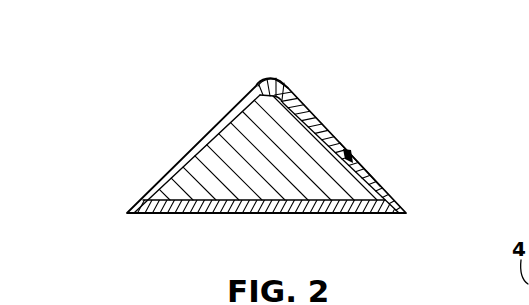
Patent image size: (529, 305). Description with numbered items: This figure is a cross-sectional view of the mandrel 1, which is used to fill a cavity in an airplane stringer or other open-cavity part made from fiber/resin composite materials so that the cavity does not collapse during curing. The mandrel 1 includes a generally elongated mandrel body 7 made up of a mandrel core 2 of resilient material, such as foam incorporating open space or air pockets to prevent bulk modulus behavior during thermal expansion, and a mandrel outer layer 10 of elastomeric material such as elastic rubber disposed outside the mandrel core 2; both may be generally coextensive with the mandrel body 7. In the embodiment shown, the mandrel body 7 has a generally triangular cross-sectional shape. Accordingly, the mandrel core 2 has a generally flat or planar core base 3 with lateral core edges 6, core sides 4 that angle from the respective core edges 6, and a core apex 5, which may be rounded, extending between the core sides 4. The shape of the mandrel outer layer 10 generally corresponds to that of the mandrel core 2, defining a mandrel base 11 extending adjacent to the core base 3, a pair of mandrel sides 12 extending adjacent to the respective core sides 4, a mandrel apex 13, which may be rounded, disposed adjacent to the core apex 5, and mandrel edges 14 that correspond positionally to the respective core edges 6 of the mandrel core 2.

The mandrel 1 is at (334, 68).
The mandrel core 2 is at (352, 156).
The core base 3 is at (218, 210).
The core sides 4 is at (333, 132).
The core apex 5 is at (263, 80).
The core edges 6 is at (392, 215).
The mandrel body 7 is at (216, 96).
The mandrel outer layer 10 is at (384, 172).
The mandrel base 11 is at (283, 215).
The mandrel sides 12 is at (307, 110).
The mandrel apex 13 is at (285, 83).
The mandrel edges 14 is at (405, 214).